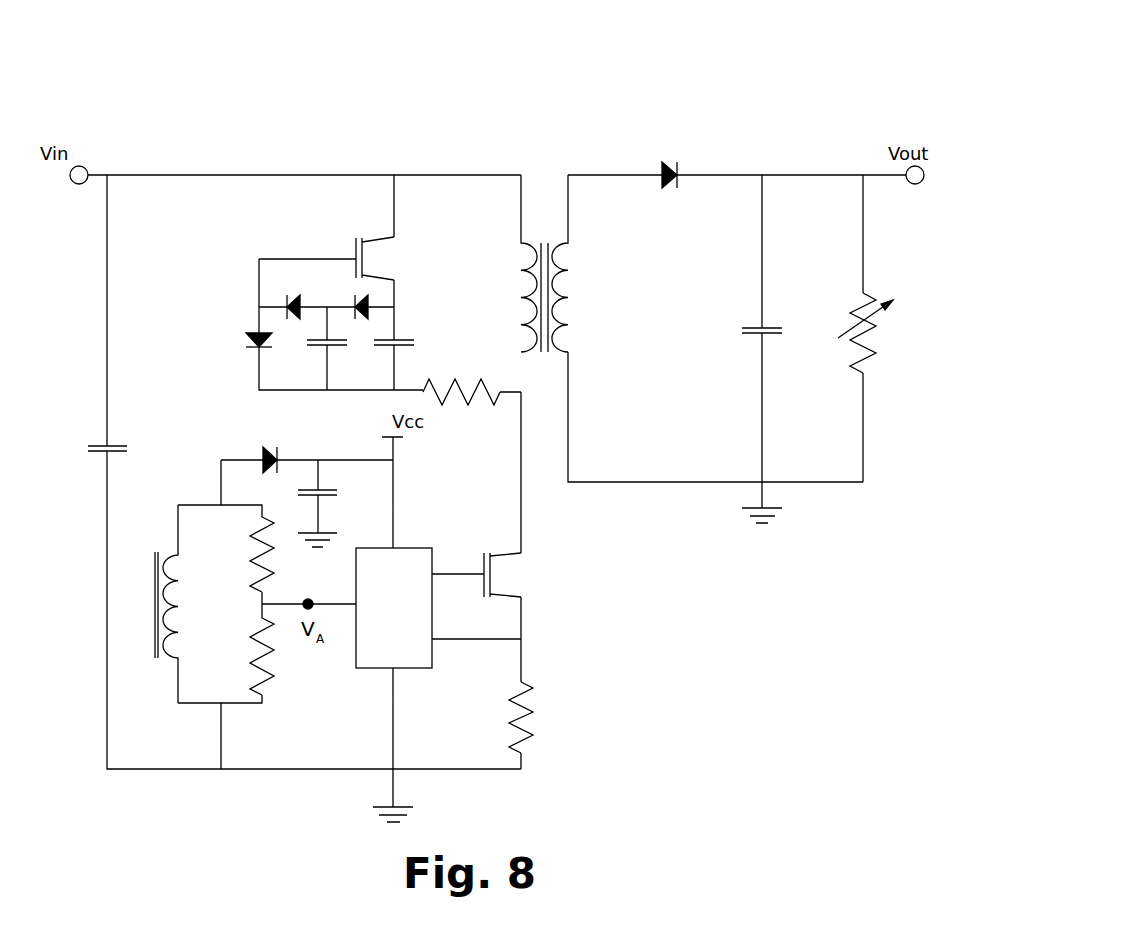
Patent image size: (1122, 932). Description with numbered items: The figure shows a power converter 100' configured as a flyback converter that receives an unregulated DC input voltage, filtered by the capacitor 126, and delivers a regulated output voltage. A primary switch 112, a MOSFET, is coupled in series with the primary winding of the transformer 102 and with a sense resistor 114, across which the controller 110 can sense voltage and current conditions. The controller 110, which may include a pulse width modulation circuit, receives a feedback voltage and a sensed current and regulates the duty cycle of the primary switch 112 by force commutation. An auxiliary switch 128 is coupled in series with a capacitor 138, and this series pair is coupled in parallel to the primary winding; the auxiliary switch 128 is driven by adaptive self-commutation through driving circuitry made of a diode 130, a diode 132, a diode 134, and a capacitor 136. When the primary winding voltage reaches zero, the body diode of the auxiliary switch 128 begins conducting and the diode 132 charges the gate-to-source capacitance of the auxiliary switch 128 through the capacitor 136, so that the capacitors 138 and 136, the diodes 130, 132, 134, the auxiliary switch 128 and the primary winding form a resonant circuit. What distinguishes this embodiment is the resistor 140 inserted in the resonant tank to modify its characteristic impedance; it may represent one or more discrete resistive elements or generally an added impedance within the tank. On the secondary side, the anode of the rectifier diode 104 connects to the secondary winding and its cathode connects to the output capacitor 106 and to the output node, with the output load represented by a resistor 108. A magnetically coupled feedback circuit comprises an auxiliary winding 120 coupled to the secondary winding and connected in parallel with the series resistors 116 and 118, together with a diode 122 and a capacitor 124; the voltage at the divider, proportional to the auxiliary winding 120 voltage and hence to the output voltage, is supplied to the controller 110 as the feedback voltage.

The power converter 100' is at (774, 55).
The transformer 102 is at (538, 203).
The rectifier diode 104 is at (672, 158).
The output capacitor 106 is at (777, 325).
The resistor 108 is at (877, 329).
The controller 110 is at (413, 547).
The primary switch 112 is at (483, 552).
The sense resistor 114 is at (507, 724).
The resistor 116 is at (268, 557).
The resistor 118 is at (291, 656).
The auxiliary winding 120 is at (172, 557).
The diode 122 is at (270, 456).
The capacitor 124 is at (325, 492).
The capacitor 126 is at (88, 447).
The auxiliary switch 128 is at (362, 236).
The diode 130 is at (353, 300).
The diode 132 is at (292, 300).
The diode 134 is at (252, 332).
The capacitor 136 is at (311, 346).
The capacitor 138 is at (401, 339).
The resistor 140 is at (465, 386).